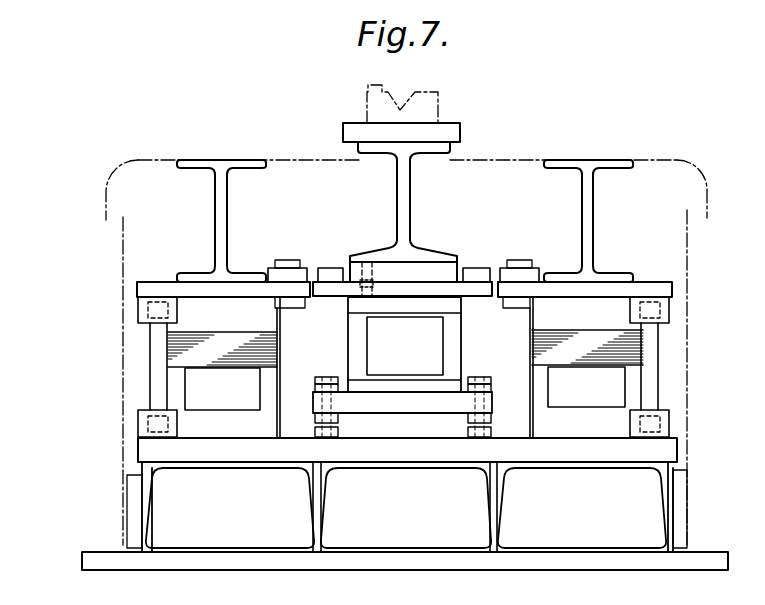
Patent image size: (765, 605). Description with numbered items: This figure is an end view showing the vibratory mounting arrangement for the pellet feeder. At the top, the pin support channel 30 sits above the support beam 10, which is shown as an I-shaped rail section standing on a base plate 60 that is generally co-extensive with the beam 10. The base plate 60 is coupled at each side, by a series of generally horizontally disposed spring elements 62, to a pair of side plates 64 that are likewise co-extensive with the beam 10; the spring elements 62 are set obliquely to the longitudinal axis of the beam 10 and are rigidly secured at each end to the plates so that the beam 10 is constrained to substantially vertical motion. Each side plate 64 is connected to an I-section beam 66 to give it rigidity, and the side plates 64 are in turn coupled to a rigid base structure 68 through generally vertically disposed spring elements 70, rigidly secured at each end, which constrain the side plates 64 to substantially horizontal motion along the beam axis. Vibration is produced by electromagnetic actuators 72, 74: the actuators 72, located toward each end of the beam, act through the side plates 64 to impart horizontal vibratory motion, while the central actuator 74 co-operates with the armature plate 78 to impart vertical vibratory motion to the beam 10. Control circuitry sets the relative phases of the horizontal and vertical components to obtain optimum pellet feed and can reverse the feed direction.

The pin support channel 30 is at (372, 103).
The support beam 10 is at (410, 189).
The base plate 60 is at (397, 270).
The spring elements 62 is at (310, 262).
The side plates 64 is at (162, 290).
The I-section beams 66 is at (215, 200).
The rigid base structure 68 is at (142, 503).
The spring elements 70 is at (157, 378).
The electromagnetic actuators 72 is at (200, 423).
The electromagnetic actuator 74 is at (425, 343).
The armature plate 78 is at (349, 300).